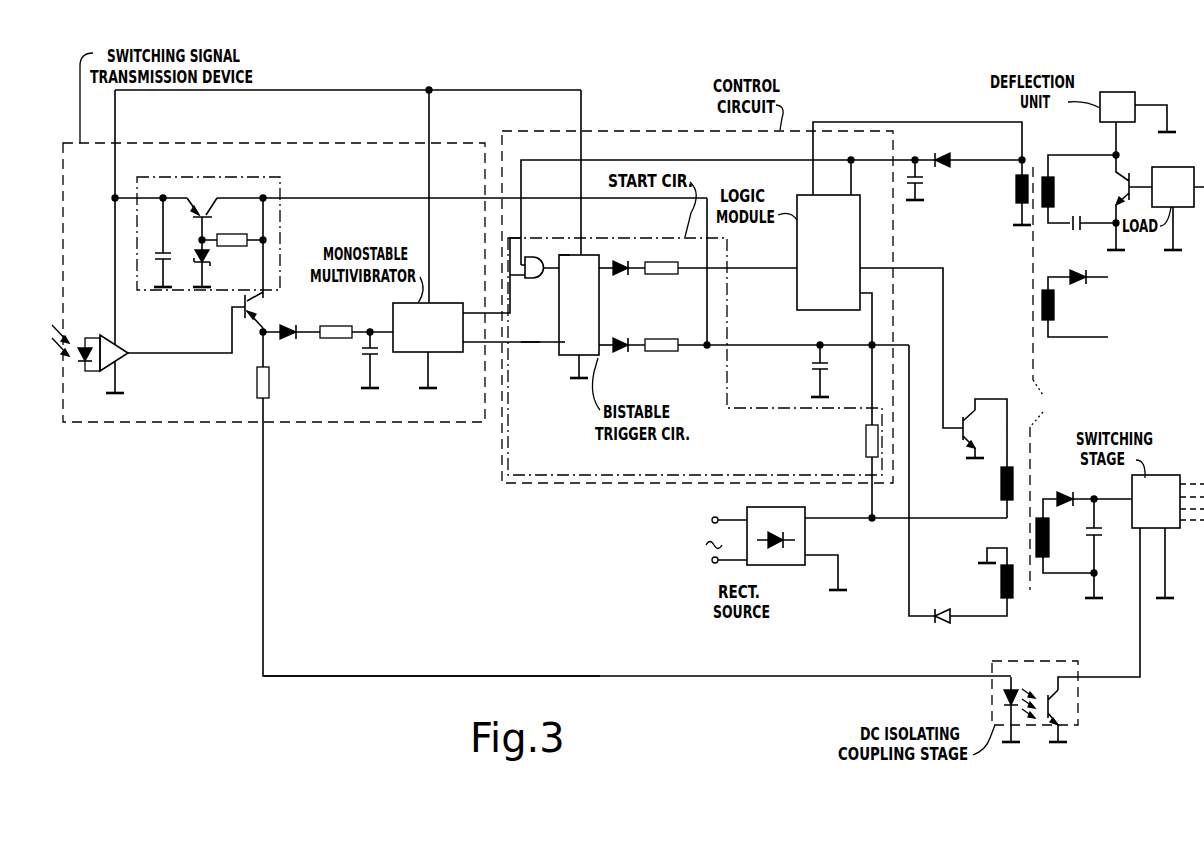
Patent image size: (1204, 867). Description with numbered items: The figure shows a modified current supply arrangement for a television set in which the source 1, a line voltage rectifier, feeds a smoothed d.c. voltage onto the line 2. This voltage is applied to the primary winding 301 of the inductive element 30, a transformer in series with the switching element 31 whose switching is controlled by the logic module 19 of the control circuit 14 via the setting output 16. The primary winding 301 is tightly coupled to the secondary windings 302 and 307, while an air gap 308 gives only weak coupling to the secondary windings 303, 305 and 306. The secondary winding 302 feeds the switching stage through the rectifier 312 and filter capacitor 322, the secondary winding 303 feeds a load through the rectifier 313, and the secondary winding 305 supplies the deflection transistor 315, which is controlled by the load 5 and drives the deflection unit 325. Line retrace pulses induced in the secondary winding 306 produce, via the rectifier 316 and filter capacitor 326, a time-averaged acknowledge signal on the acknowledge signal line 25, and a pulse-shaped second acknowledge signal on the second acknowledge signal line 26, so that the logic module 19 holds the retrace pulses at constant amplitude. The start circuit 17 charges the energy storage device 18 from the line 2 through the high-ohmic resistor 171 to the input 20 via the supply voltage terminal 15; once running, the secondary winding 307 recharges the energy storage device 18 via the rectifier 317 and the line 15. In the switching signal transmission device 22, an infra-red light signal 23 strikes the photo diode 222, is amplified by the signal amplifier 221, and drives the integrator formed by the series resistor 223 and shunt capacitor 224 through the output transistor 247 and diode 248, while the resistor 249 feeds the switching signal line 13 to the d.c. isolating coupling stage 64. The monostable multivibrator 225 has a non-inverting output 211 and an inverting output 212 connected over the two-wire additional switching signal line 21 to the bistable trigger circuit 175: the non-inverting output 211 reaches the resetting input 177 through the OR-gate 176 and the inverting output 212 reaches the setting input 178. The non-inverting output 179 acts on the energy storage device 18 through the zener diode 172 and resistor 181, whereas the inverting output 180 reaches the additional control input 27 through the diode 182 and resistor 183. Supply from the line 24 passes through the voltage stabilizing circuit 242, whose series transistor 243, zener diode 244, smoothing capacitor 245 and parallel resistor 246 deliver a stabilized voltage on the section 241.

The source 1 is at (762, 507).
The line 2 is at (952, 520).
The load 5 is at (1178, 167).
The switching signal line 13 is at (878, 678).
The control circuit 14 is at (686, 131).
The supply voltage terminal 15 is at (909, 572).
The setting output 16 is at (911, 348).
The start circuit 17 is at (752, 408).
The energy storage device 18 is at (818, 368).
The logic module 19 is at (828, 252).
The input 20 is at (870, 322).
The additional switching signal line 21 is at (522, 350).
The switching signal transmission device 22 is at (307, 143).
The infra-red light signal 23 is at (48, 337).
The line 24 is at (415, 200).
The acknowledge signal line 25 is at (889, 160).
The second acknowledge signal line 26 is at (895, 120).
The additional control input 27 is at (758, 268).
The inductive element 30 is at (1025, 276).
The switching element 31 is at (966, 428).
The d.c. isolating coupling stage 64 is at (1035, 661).
The resistor 171 is at (866, 440).
The zener diode 172 is at (624, 360).
The bistable trigger circuit 175 is at (571, 358).
The OR-gate 176 is at (533, 257).
The resetting input 177 is at (556, 252).
The setting input 178 is at (558, 350).
The non-inverting output 179 is at (605, 344).
The inverting output 180 is at (603, 262).
The resistor 181 is at (665, 352).
The diode 182 is at (626, 286).
The resistor 183 is at (665, 276).
The non-inverting output 211 is at (466, 305).
The inverting output 212 is at (465, 362).
The signal amplifier 221 is at (118, 359).
The photo diode 222 is at (79, 366).
The series resistor 223 is at (340, 318).
The shunt capacitor 224 is at (364, 352).
The monostable multivibrator 225 is at (428, 345).
The section of the line 241 is at (113, 197).
The voltage stabilizing circuit 242 is at (280, 178).
The series transistor 243 is at (202, 209).
The zener diode 244 is at (220, 263).
The smoothing capacitor 245 is at (156, 241).
The parallel resistor 246 is at (232, 246).
The output transistor 247 is at (253, 307).
The diode 248 is at (291, 338).
The resistor 249 is at (269, 384).
The primary winding 301 is at (1001, 484).
The secondary winding 302 is at (1049, 543).
The secondary winding 303 is at (1075, 313).
The secondary winding 305 is at (1080, 191).
The secondary winding 306 is at (1016, 190).
The secondary winding 307 is at (1001, 583).
The air gap 308 is at (1043, 401).
The rectifier 312 is at (1087, 492).
The rectifier 313 is at (1084, 283).
The deflection transistor 315 is at (1121, 202).
The rectifier 316 is at (944, 156).
The rectifier 317 is at (962, 625).
The filter capacitor 322 is at (1106, 547).
The deflection unit 325 is at (1120, 93).
The filter capacitor 326 is at (932, 181).